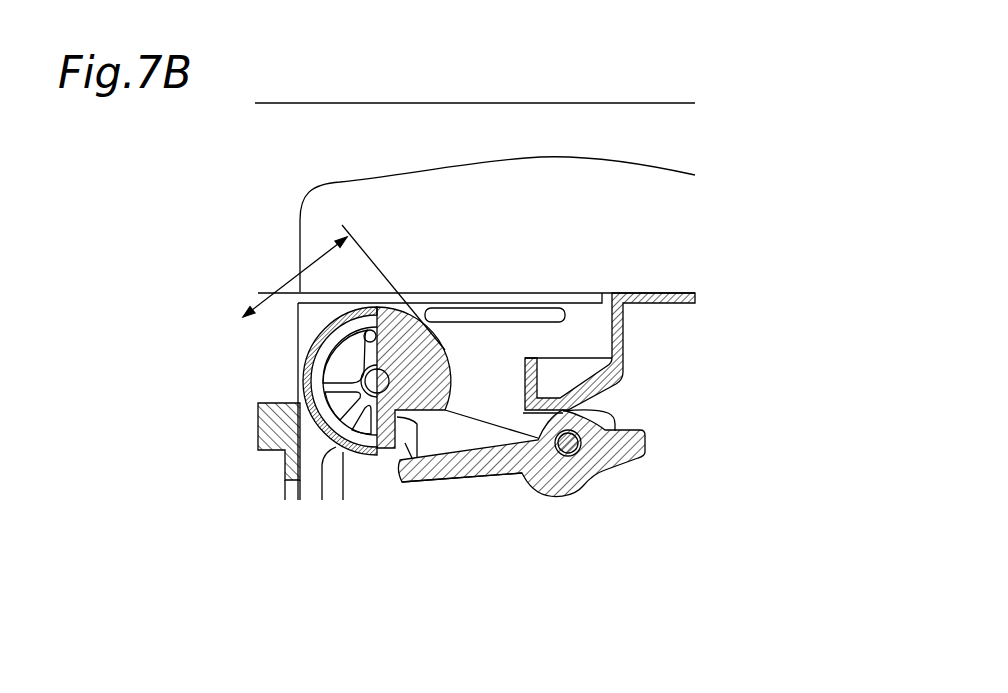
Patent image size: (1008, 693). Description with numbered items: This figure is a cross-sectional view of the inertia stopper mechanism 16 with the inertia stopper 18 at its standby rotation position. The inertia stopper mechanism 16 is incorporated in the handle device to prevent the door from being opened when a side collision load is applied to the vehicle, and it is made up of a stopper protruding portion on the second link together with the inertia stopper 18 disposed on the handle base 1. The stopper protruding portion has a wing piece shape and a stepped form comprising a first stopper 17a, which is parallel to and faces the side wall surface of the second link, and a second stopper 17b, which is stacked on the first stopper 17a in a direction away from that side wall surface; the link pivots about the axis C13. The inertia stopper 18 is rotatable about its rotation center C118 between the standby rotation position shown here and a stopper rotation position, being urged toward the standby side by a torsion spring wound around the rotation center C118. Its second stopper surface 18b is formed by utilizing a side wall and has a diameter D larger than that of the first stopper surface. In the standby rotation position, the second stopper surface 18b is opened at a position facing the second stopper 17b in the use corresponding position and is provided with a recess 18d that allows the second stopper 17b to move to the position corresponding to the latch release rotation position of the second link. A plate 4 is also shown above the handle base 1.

The handle base 1 is at (677, 333).
The sheet tray 4 is at (610, 117).
The inertia stopper mechanism 16 is at (365, 500).
The first stopper 17a is at (452, 442).
The second stopper 17b is at (495, 473).
The inertia stopper 18 is at (447, 422).
The second stopper surface 18b is at (365, 452).
The recess 18d is at (414, 483).
The pivot axis of lever C13 is at (568, 456).
The rotation center C118 is at (377, 383).
The diameter D is at (344, 287).